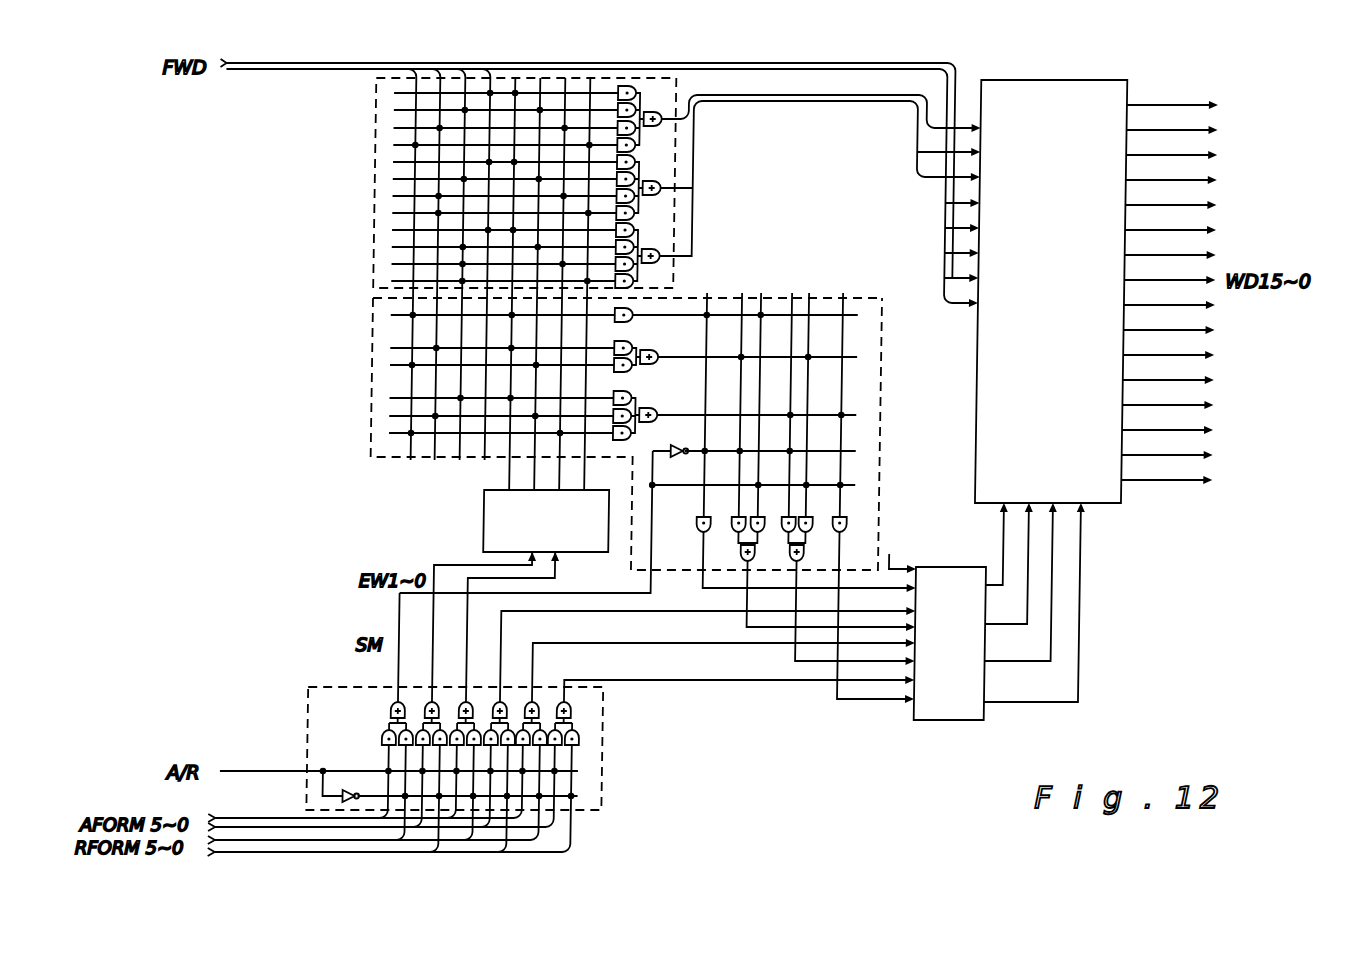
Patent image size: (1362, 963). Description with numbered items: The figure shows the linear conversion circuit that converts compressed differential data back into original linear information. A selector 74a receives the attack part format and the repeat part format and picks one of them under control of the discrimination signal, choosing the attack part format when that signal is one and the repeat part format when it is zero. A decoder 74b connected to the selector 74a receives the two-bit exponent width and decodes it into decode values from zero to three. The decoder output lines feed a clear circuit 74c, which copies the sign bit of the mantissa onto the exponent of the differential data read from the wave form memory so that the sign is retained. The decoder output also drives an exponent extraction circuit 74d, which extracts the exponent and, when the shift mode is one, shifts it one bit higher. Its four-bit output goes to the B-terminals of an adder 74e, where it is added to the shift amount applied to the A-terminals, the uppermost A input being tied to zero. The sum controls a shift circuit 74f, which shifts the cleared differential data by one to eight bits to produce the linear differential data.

The selector 74a is at (612, 754).
The decoder 74b is at (490, 522).
The clear circuit 74c is at (480, 78).
The exponent extraction circuit 74d is at (748, 297).
The adder 74e is at (963, 567).
The shift circuit 74f is at (1111, 80).